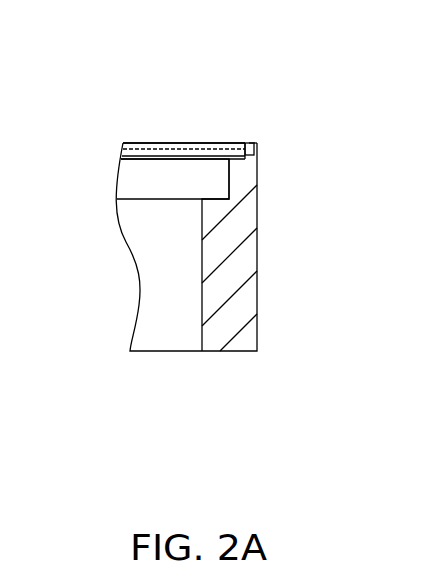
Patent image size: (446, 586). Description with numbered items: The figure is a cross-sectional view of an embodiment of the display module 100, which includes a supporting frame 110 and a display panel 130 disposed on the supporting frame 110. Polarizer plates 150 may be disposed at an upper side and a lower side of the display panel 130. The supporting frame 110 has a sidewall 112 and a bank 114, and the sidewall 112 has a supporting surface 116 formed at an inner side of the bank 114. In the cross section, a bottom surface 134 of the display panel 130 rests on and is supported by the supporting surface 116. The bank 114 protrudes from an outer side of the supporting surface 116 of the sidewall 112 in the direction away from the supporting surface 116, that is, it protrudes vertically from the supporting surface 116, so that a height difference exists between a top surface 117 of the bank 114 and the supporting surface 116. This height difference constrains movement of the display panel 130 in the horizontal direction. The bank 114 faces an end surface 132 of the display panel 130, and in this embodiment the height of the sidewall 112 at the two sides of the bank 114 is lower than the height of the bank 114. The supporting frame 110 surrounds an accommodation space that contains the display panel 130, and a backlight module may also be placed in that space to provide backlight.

The display module 100 is at (92, 42).
The supporting frame 110 is at (270, 289).
The sidewall 112 is at (242, 257).
The bank 114 is at (256, 146).
The supporting surface 116 is at (255, 152).
The top surface 117 is at (249, 143).
The display panel 130 is at (160, 146).
The end surface 132 is at (246, 143).
The bottom surface 134 is at (230, 165).
The polarizer plate 150 is at (145, 142).